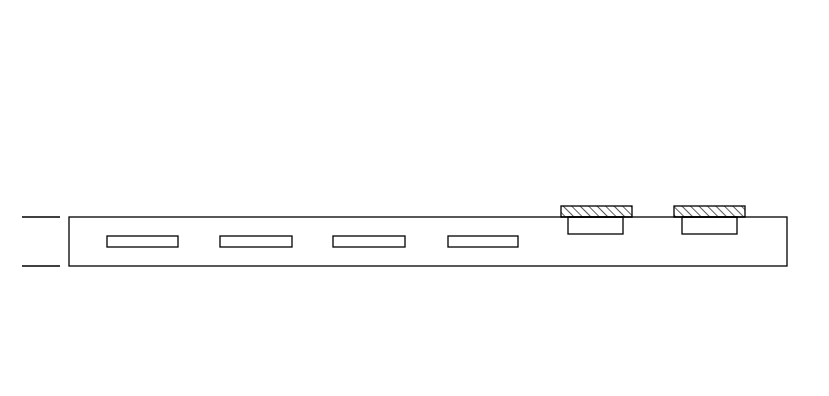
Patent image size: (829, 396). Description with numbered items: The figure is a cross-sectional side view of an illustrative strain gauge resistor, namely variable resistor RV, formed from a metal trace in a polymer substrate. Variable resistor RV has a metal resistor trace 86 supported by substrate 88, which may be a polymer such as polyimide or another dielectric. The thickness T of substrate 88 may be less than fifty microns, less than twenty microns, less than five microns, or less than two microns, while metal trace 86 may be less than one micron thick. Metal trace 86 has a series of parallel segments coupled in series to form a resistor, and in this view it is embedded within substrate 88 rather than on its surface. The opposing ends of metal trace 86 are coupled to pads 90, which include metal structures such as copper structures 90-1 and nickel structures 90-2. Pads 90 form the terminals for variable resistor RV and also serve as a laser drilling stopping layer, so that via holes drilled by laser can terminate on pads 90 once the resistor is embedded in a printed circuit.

The variable resistor RV is at (415, 83).
The substrate 88 is at (108, 266).
The metal resistor trace 86 is at (150, 236).
The pads 90 is at (655, 230).
The copper structures 90-1 is at (613, 206).
The nickel structures 90-2 is at (600, 234).
The thickness T is at (41, 177).